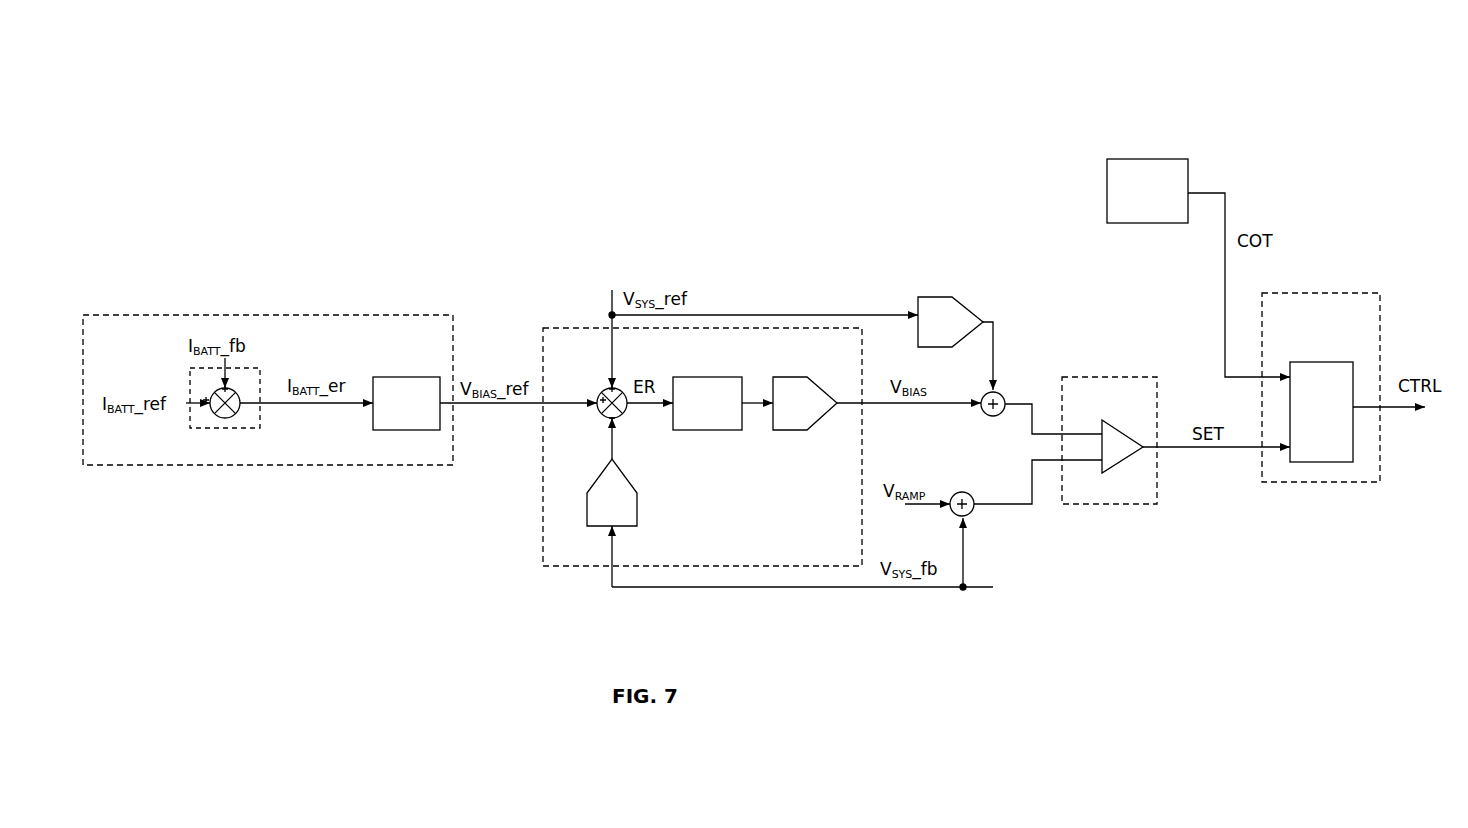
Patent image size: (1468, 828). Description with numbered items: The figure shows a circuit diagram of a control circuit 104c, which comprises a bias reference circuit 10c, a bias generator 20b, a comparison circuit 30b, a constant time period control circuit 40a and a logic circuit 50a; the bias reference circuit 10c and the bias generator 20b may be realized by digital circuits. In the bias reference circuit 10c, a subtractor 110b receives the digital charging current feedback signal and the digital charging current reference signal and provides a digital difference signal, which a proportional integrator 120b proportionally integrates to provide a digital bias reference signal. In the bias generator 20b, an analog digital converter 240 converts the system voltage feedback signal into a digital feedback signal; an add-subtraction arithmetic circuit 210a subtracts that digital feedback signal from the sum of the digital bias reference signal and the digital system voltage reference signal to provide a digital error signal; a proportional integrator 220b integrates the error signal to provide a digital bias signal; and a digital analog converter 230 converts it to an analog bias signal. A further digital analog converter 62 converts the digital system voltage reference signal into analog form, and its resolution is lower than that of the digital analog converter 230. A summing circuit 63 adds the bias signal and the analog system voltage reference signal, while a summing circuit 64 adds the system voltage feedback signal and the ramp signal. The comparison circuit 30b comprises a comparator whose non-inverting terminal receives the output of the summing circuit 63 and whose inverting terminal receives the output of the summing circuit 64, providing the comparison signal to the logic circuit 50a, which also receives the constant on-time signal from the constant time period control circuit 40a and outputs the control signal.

The control circuit 104c is at (810, 84).
The bias reference circuit 10c is at (268, 390).
The subtractor 110b is at (262, 410).
The proportional integrator 120b is at (393, 377).
The bias generator 20b is at (702, 447).
The add-subtraction arithmetic circuit 210a is at (600, 413).
The proportional integrator 220b is at (700, 377).
The digital analog converter 230 is at (797, 377).
The analog digital converter 240 is at (637, 492).
The digital analog converter 62 is at (975, 320).
The summing circuit 63 is at (1002, 397).
The summing circuit 64 is at (971, 496).
The comparison circuit 30b is at (1109, 440).
The constant time period control circuit 40a is at (1147, 191).
The logic circuit 50a is at (1321, 387).